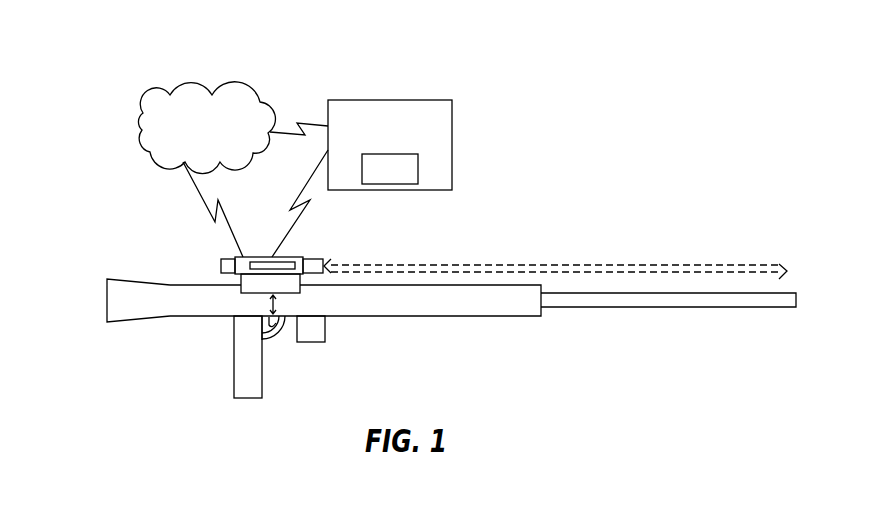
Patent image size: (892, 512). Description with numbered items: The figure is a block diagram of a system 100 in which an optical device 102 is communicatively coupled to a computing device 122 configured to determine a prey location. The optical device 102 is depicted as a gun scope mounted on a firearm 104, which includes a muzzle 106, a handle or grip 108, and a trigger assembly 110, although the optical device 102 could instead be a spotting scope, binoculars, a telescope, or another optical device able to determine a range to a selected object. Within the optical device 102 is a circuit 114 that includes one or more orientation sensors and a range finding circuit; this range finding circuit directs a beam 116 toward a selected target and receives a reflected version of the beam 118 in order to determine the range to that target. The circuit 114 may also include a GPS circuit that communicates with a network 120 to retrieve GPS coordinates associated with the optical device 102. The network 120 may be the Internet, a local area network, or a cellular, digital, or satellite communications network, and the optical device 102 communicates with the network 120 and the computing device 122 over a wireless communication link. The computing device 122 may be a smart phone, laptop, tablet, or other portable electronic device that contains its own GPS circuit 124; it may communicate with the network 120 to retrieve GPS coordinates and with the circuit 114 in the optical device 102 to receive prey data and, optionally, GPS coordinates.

The system 100 is at (146, 7).
The optical device 102 is at (240, 257).
The firearm 104 is at (158, 283).
The muzzle 106 is at (569, 307).
The handle or grip 108 is at (234, 357).
The trigger assembly 110 is at (268, 318).
The circuit 114 is at (288, 258).
The beam 116 is at (685, 273).
The reflected version of the beam 118 is at (670, 265).
The network 120 is at (167, 97).
The computing device 122 is at (382, 100).
The GPS circuit 124 is at (390, 185).